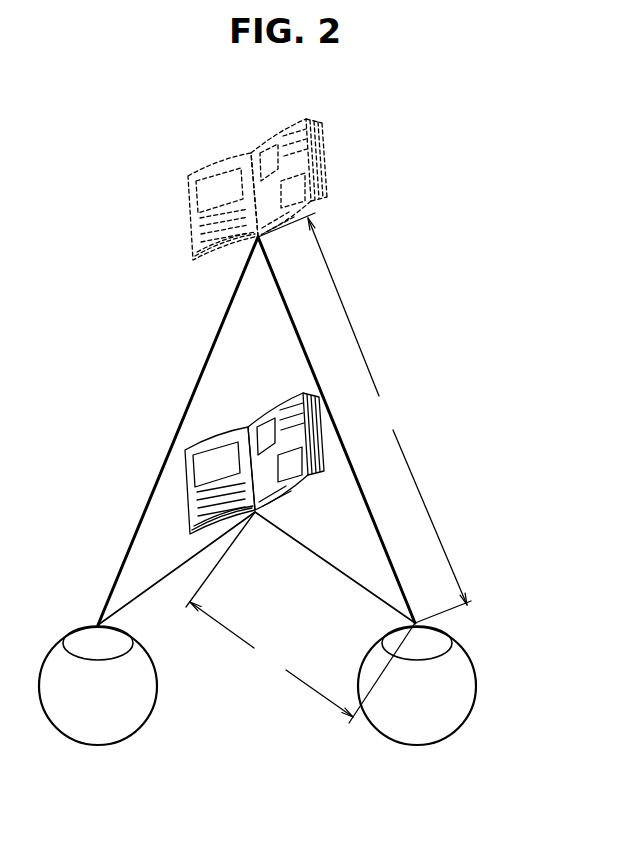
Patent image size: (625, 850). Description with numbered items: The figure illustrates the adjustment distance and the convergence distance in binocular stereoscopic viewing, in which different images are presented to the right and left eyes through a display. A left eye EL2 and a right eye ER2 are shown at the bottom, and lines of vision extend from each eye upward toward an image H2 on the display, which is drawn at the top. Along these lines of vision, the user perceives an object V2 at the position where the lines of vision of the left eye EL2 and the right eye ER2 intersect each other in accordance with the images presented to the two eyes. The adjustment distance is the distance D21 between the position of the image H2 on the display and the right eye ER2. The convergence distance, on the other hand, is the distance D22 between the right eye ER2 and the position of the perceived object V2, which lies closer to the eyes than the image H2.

The image on the display H2 is at (322, 148).
The object perceived by the user V2 is at (274, 406).
The left eye EL2 is at (98, 747).
The right eye ER2 is at (417, 747).
The adjustment distance D21 is at (364, 418).
The convergence distance D22 is at (300, 617).